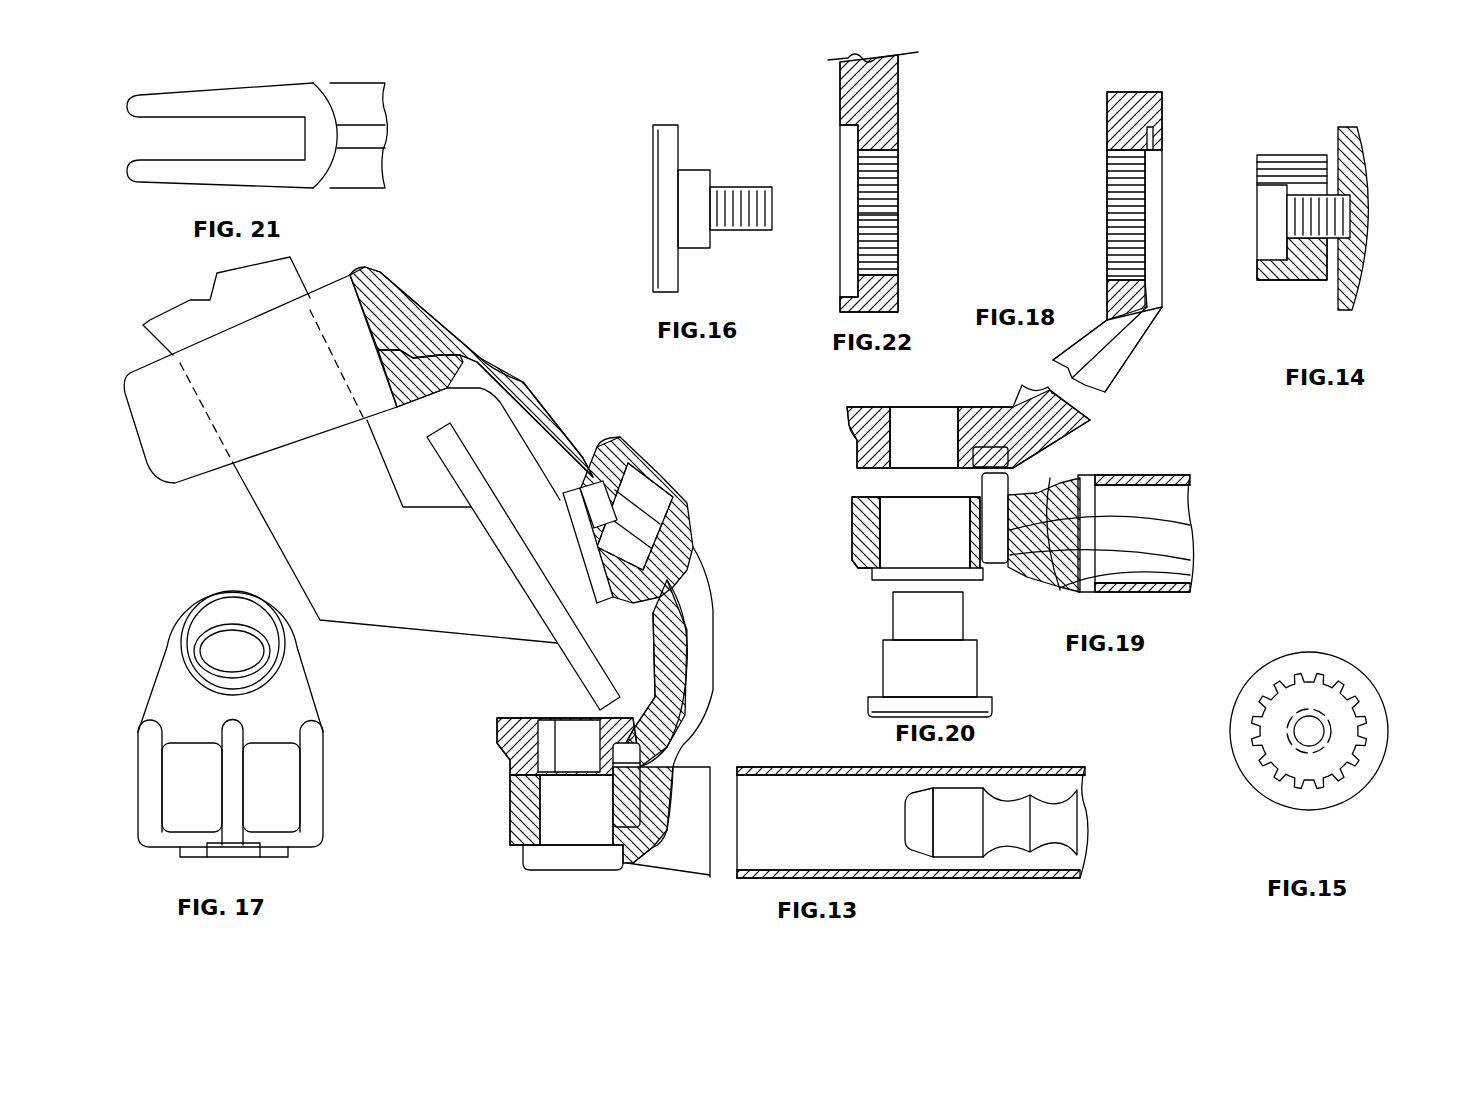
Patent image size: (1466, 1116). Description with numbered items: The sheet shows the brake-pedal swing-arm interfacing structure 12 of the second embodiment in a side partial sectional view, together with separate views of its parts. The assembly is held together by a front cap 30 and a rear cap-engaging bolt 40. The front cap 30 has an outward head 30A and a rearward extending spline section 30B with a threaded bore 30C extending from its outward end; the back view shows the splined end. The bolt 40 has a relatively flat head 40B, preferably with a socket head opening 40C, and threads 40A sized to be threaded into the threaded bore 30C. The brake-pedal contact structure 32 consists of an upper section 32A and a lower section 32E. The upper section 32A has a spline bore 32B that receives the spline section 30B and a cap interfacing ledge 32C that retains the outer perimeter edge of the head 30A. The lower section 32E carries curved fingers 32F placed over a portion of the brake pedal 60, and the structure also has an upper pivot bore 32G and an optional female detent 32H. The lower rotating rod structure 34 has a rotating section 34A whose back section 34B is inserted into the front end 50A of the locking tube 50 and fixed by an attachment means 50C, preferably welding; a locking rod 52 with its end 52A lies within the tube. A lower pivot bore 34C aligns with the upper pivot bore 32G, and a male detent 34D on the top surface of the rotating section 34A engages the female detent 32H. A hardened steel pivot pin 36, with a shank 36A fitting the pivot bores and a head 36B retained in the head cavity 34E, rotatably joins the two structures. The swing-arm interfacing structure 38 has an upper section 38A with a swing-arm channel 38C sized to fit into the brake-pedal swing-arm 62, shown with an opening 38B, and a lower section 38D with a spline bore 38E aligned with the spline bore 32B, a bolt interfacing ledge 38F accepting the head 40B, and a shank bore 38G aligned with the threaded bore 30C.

In FIG. 13, the brake-pedal swing-arm interfacing structure 12 is at (602, 421).
In FIG. 14, the front cap 30 is at (1347, 202).
In FIG. 13, the front cap 30 is at (673, 532).
In FIG. 14, the outward head 30A is at (1348, 158).
In FIG. 15, the outward head 30A is at (1350, 663).
In FIG. 14, the spline section 30B is at (1267, 173).
In FIG. 15, the spline section 30B is at (1363, 748).
In FIG. 14, the threaded bore 30C is at (1320, 287).
In FIG. 15, the threaded bore 30C is at (1309, 731).
In FIG. 18, the brake-pedal contact structure 32 is at (1113, 239).
In FIG. 17, the brake-pedal contact structure 32 is at (238, 699).
In FIG. 18, the upper section 32A is at (1133, 122).
In FIG. 17, the upper section 32A is at (242, 598).
In FIG. 13, the upper section 32A is at (623, 440).
In FIG. 18, the spline bore 32B is at (1123, 230).
In FIG. 18, the cap interfacing ledge 32C is at (1147, 143).
In FIG. 18, the lower section 32E is at (1142, 343).
In FIG. 17, the lower section 32E is at (155, 782).
In FIG. 13, the lower section 32E is at (503, 732).
In FIG. 19, the curved fingers 32F is at (847, 423).
In FIG. 19, the upper pivot bore 32G is at (930, 430).
In FIG. 19, the female detent 32H is at (1005, 458).
In FIG. 19, the lower rotating rod structure 34 is at (1024, 539).
In FIG. 13, the lower rotating rod structure 34 is at (597, 825).
In FIG. 19, the rotating section 34A is at (1062, 553).
In FIG. 13, the rotating section 34A is at (673, 853).
In FIG. 19, the back section 34B is at (1088, 533).
In FIG. 13, the back section 34B is at (722, 857).
In FIG. 19, the lower pivot bore 34C is at (912, 522).
In FIG. 19, the male detent 34D is at (1137, 483).
In FIG. 19, the head cavity 34E is at (973, 570).
In FIG. 13, the head cavity 34E is at (626, 785).
In FIG. 20, the pivot pin 36 is at (948, 654).
In FIG. 13, the pivot pin 36 is at (573, 808).
In FIG. 20, the shank 36A is at (915, 610).
In FIG. 20, the head 36B is at (930, 707).
In FIG. 22, the brake-pedal swing-arm interfacing structure 38 is at (893, 174).
In FIG. 13, the brake-pedal swing-arm interfacing structure 38 is at (424, 516).
In FIG. 21, the upper section 38A is at (347, 113).
In FIG. 13, the upper section 38A is at (387, 342).
In FIG. 17, the clamp opening 38B is at (221, 643).
In FIG. 21, the swing-arm channel 38C is at (165, 133).
In FIG. 22, the lower section 38D is at (882, 303).
In FIG. 22, the spline bore 38E is at (898, 185).
In FIG. 22, the bolt interfacing ledge 38F is at (847, 140).
In FIG. 22, the shank bore 38G is at (845, 227).
In FIG. 16, the rear cap-engaging bolt 40 is at (680, 172).
In FIG. 13, the rear cap-engaging bolt 40 is at (600, 548).
In FIG. 16, the screw threads 40A is at (760, 227).
In FIG. 16, the head 40B is at (668, 241).
In FIG. 16, the socket head opening 40C is at (657, 207).
In FIG. 19, the locking tube 50 is at (1132, 504).
In FIG. 13, the locking tube 50 is at (912, 826).
In FIG. 19, the front end 50A is at (1133, 475).
In FIG. 13, the front end 50A is at (740, 773).
In FIG. 19, the attachment means 50C is at (1140, 577).
In FIG. 13, the locking rod 52 is at (983, 854).
In FIG. 13, the insert end 52A is at (915, 828).
In FIG. 13, the brake pedal 60 is at (590, 668).
In FIG. 13, the brake-pedal swing-arm 62 is at (190, 320).